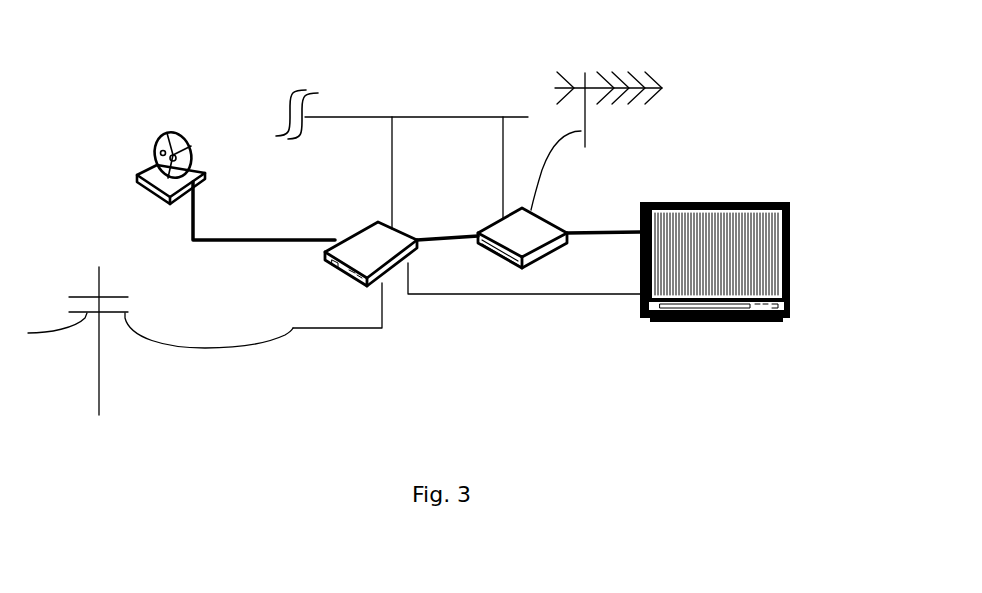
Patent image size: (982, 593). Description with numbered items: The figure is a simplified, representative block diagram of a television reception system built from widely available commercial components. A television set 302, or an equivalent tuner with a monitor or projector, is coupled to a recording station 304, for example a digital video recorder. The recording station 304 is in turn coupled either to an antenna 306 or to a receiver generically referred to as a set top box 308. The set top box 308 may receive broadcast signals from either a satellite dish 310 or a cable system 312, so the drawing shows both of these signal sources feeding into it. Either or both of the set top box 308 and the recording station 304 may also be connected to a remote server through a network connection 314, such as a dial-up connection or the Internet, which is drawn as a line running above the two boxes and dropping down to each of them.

The television set 302 is at (715, 244).
The recording station 304 is at (559, 240).
The antenna 306 is at (596, 122).
The set top box 308 is at (466, 263).
The satellite dish 310 is at (236, 184).
The cable system 312 is at (160, 341).
The network connection 314 is at (402, 159).